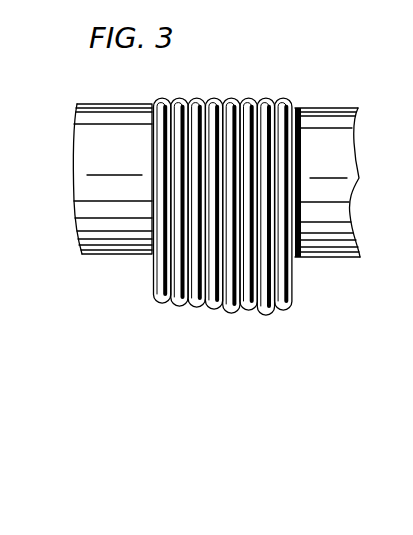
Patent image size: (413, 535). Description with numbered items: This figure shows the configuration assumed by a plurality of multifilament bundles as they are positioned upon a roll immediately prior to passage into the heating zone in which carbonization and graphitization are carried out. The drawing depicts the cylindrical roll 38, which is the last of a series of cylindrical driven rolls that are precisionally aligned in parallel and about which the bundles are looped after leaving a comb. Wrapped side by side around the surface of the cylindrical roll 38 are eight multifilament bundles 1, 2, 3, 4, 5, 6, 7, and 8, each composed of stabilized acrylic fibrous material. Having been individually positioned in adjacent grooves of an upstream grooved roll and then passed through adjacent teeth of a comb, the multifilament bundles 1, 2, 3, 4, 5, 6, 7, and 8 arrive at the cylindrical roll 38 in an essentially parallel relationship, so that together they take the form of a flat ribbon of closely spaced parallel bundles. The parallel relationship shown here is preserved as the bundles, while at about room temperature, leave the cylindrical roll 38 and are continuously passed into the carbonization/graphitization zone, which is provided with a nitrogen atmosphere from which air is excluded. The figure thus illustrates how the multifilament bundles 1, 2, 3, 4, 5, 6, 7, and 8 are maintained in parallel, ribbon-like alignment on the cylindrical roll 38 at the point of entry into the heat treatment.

The multifilament bundle 1 is at (157, 98).
The multifilament bundle 2 is at (180, 98).
The multifilament bundle 3 is at (196, 98).
The multifilament bundle 4 is at (213, 98).
The multifilament bundle 5 is at (229, 98).
The multifilament bundle 6 is at (249, 98).
The multifilament bundle 7 is at (267, 98).
The multifilament bundle 8 is at (296, 99).
The cylindrical driven roll 38 is at (335, 154).